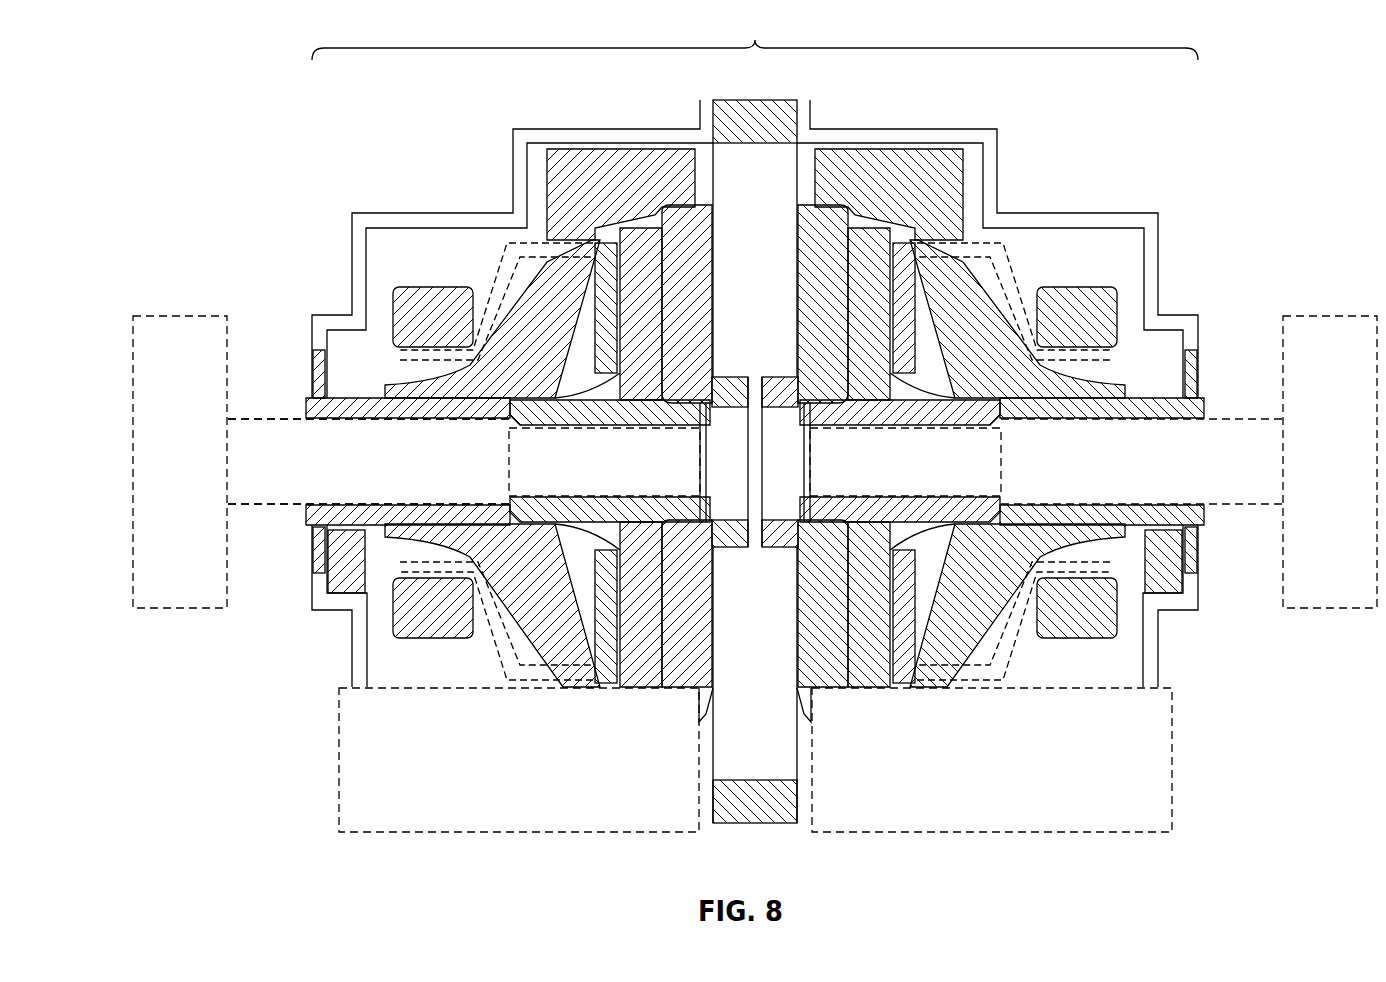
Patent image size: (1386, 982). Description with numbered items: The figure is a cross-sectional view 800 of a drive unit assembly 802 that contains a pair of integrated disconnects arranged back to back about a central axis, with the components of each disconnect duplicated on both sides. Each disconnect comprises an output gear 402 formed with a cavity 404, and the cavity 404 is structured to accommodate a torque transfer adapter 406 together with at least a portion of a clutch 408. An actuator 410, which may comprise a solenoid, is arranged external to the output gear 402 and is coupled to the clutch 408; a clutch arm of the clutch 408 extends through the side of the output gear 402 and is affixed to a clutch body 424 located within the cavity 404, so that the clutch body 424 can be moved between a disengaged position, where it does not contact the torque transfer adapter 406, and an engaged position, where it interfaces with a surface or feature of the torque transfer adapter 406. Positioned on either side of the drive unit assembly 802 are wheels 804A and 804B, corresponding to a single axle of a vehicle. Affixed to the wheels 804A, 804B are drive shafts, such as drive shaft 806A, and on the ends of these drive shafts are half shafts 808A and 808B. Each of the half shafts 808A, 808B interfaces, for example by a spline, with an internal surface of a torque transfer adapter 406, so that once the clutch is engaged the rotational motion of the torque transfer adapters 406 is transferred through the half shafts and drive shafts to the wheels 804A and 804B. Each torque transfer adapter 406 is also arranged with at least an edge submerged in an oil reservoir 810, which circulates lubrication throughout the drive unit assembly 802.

The cross-sectional view 800 is at (238, 38).
The drive unit assembly 802 is at (755, 38).
The output gear 402 is at (641, 152).
The clutch 408 is at (620, 208).
The clutch body 424 is at (500, 272).
The actuator 410 is at (397, 305).
The cavity 404 is at (577, 562).
The torque transfer adapter 406 is at (867, 562).
The wheel 804A is at (172, 326).
The wheel 804B is at (1338, 326).
The drive shaft 806A is at (398, 477).
The half shaft 808A is at (633, 477).
The half shaft 808B is at (931, 477).
The oil reservoir 810 is at (542, 774).